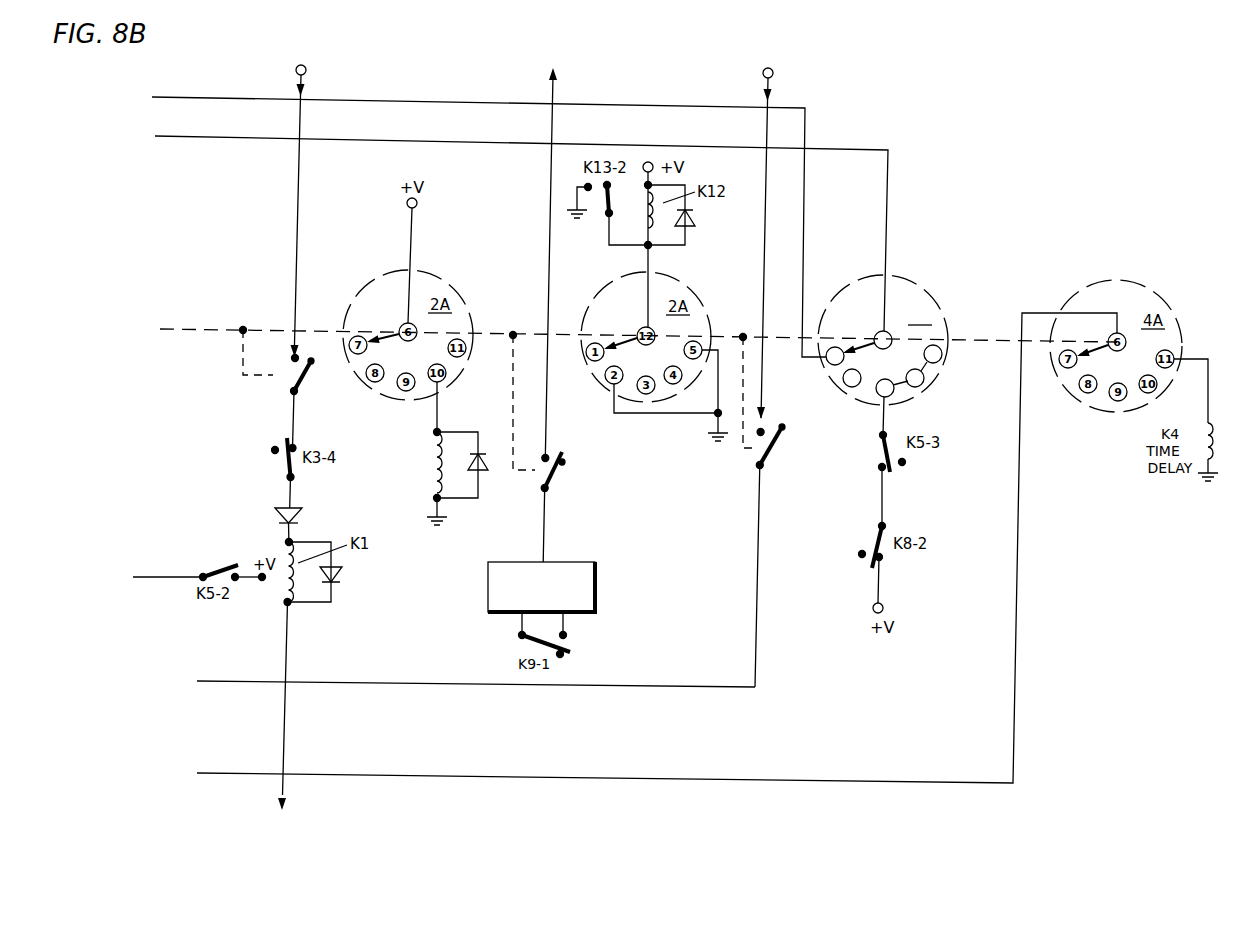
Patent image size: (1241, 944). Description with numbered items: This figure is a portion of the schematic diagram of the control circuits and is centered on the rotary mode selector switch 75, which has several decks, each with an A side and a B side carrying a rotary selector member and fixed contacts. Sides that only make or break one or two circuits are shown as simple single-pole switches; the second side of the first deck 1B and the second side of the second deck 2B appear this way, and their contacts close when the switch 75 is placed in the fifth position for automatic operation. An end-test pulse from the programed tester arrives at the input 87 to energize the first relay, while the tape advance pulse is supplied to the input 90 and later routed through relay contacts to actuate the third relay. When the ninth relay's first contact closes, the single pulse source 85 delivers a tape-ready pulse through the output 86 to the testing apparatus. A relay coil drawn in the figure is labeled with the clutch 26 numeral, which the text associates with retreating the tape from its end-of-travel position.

The input 87 is at (306, 73).
The output 86 is at (558, 80).
The input 90 is at (773, 77).
The mode selector switch 75 is at (970, 275).
The single pulse source 85 is at (598, 581).
The clutch 26 is at (434, 466).
The second side of the first deck 1B is at (270, 321).
The second side of the second deck 2B is at (672, 289).